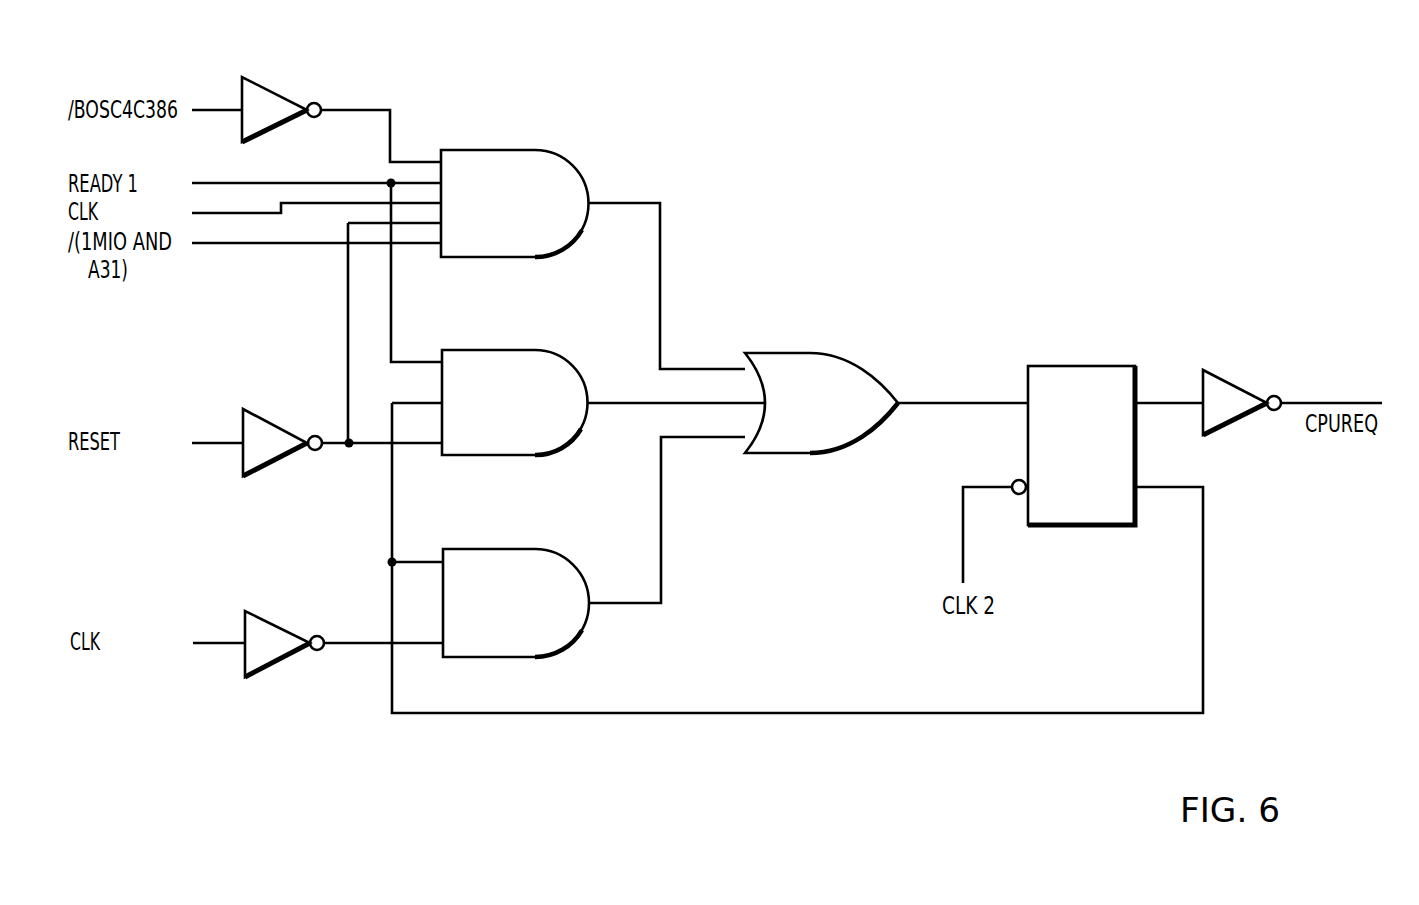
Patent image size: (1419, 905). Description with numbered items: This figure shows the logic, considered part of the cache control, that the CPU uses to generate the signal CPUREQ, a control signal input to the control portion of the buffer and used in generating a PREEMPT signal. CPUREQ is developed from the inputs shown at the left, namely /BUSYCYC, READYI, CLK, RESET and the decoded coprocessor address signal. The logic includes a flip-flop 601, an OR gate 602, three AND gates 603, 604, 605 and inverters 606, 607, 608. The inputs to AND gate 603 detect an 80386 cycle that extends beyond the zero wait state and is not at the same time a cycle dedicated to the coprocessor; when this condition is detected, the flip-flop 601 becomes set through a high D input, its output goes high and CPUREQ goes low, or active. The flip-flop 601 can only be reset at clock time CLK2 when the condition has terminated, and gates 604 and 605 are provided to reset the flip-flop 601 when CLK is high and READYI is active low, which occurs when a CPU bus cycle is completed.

The flip-flop 601 is at (1068, 365).
The OR gate 602 is at (777, 352).
The AND gate 603 is at (493, 149).
The AND gate 604 is at (492, 349).
The AND gate 605 is at (500, 548).
The inverter 606 is at (268, 88).
The inverter 607 is at (270, 617).
The inverter 608 is at (1232, 380).